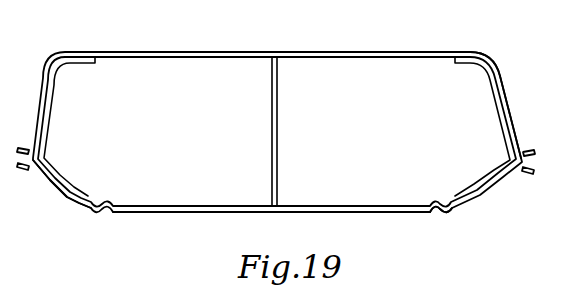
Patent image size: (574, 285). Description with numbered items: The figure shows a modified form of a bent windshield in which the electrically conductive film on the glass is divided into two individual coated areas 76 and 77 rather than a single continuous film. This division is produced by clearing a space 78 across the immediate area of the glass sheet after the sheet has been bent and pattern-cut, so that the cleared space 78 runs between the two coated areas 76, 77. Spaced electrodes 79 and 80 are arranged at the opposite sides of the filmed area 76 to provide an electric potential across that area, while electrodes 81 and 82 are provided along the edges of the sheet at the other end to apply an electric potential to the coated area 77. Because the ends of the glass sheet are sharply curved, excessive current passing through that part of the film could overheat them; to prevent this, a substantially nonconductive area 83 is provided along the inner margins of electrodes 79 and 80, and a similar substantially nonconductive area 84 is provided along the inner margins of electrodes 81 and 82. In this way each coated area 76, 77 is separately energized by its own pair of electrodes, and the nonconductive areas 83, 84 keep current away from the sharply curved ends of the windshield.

The coated area 76 is at (186, 113).
The coated area 77 is at (372, 93).
The cleared space 78 is at (277, 80).
The electrode 79 is at (128, 52).
The electrode 80 is at (163, 212).
The electrode 81 is at (438, 56).
The electrode 82 is at (420, 209).
The substantially nonconductive area 83 is at (63, 197).
The substantially nonconductive area 84 is at (499, 108).